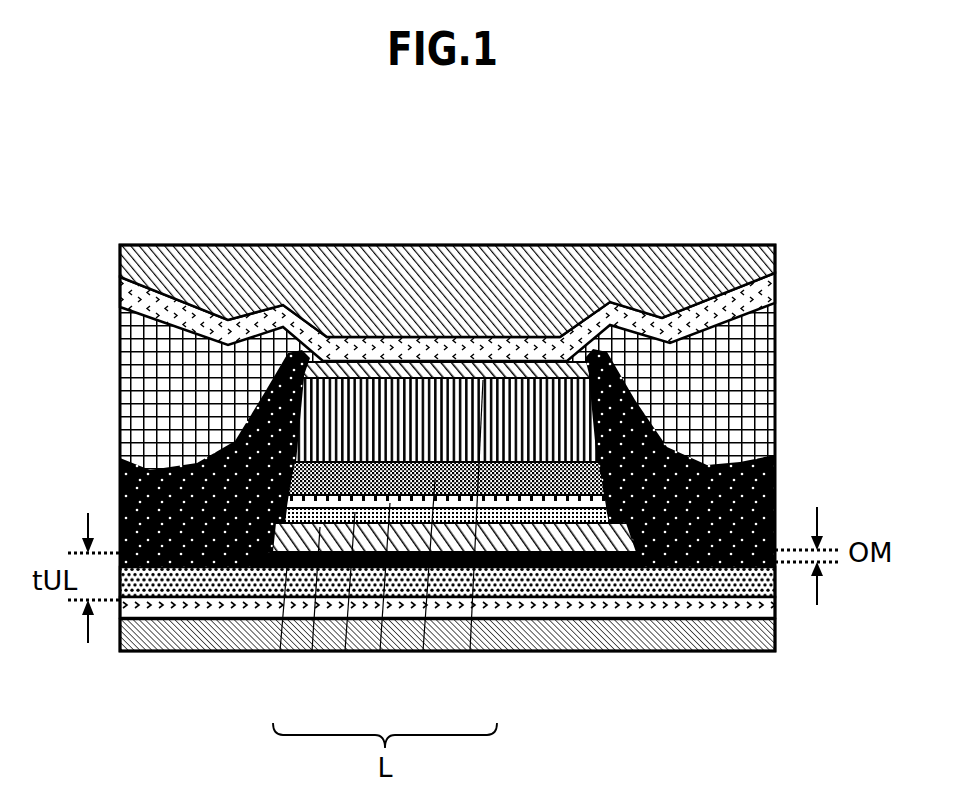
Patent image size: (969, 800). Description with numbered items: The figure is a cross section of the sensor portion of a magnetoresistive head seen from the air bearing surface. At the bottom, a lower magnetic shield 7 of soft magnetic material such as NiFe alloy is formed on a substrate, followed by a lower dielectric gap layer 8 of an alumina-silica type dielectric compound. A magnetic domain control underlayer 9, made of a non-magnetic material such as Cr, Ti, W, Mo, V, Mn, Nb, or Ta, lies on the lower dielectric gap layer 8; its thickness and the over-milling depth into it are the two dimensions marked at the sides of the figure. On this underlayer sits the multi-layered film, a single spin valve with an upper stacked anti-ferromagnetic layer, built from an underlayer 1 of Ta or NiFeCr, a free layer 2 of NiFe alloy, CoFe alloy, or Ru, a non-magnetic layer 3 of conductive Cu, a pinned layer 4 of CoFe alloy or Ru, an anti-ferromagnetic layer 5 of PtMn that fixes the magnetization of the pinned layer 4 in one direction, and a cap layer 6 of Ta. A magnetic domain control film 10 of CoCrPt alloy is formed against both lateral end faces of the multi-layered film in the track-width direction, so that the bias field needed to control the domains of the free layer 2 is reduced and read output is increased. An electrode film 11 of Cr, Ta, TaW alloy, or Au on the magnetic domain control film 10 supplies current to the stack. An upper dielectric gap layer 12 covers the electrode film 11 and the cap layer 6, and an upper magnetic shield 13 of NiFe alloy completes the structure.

The underlayer 1 is at (280, 651).
The free layer 2 is at (312, 651).
The non-magnetic layer 3 is at (345, 651).
The pinned layer 4 is at (380, 651).
The anti-ferromagnetic layer 5 is at (423, 651).
The cap layer 6 is at (470, 651).
The lower magnetic shield 7 is at (595, 633).
The lower dielectric gap layer 8 is at (638, 603).
The magnetic domain control underlayer 9 is at (677, 583).
The magnetic domain control film 10 is at (120, 478).
The electrode film 11 is at (145, 375).
The upper dielectric gap layer 12 is at (775, 290).
The upper magnetic shield 13 is at (775, 254).